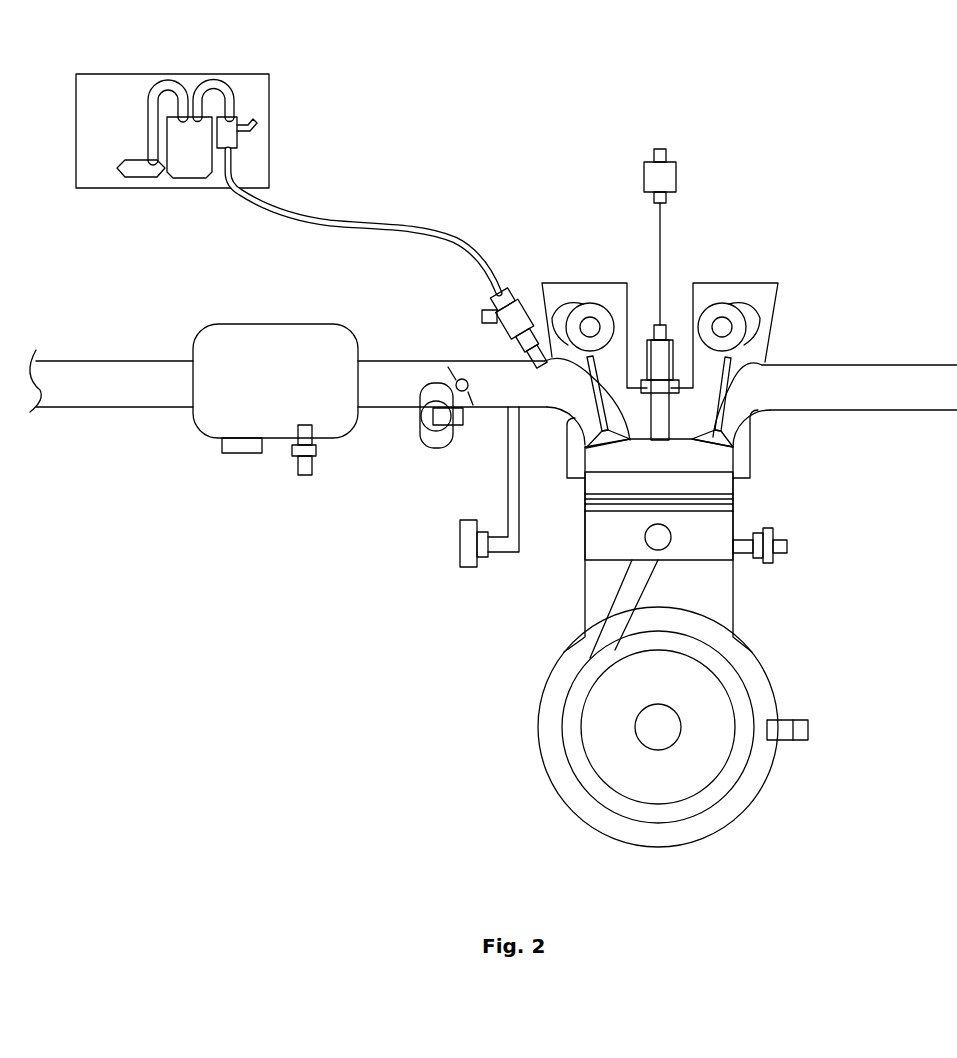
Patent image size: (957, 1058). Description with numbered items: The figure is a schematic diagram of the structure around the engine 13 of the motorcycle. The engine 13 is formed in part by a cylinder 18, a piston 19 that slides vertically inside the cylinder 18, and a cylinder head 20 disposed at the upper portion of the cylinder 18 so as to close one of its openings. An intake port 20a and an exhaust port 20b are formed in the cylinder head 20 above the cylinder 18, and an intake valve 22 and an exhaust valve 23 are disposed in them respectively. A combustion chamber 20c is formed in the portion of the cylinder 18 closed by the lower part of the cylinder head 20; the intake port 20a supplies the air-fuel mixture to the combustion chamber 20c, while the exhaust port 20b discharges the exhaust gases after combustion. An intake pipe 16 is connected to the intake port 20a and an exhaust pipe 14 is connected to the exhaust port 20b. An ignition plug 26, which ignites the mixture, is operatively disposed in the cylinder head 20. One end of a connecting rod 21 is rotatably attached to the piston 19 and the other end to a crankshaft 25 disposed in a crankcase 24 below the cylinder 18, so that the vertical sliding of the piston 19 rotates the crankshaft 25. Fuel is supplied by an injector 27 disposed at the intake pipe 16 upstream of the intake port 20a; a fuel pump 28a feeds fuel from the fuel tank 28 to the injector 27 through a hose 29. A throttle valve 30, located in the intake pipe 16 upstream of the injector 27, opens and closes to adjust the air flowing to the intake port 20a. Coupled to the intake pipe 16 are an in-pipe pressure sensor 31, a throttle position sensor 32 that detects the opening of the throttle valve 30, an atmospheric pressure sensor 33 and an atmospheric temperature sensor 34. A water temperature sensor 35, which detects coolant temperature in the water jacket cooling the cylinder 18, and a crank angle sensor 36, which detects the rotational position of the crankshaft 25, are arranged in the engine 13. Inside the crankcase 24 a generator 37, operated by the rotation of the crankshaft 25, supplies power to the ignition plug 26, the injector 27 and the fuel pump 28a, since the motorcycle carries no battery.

The engine 13 is at (790, 268).
The exhaust pipe 14 is at (882, 365).
The intake pipe 16 is at (400, 361).
The cylinder 18 is at (735, 512).
The piston 19 is at (600, 528).
The cylinder head 20 is at (735, 462).
The intake port 20a is at (567, 420).
The exhaust port 20b is at (762, 413).
The combustion chamber 20c is at (654, 442).
The connecting rod 21 is at (615, 615).
The intake valve 22 is at (590, 357).
The exhaust valve 23 is at (723, 357).
The crankcase 24 is at (757, 657).
The crankshaft 25 is at (653, 732).
The ignition plug 26 is at (656, 325).
The injector 27 is at (510, 312).
The fuel tank 28 is at (89, 190).
The fuel pump 28a is at (191, 165).
The hose 29 is at (338, 223).
The throttle valve 30 is at (443, 360).
The in-pipe pressure sensor 31 is at (467, 568).
The throttle position sensor 32 is at (442, 412).
The atmospheric pressure sensor 33 is at (240, 452).
The atmospheric temperature sensor 34 is at (305, 476).
The water temperature sensor 35 is at (787, 546).
The crank angle sensor 36 is at (808, 730).
The generator 37 is at (743, 773).